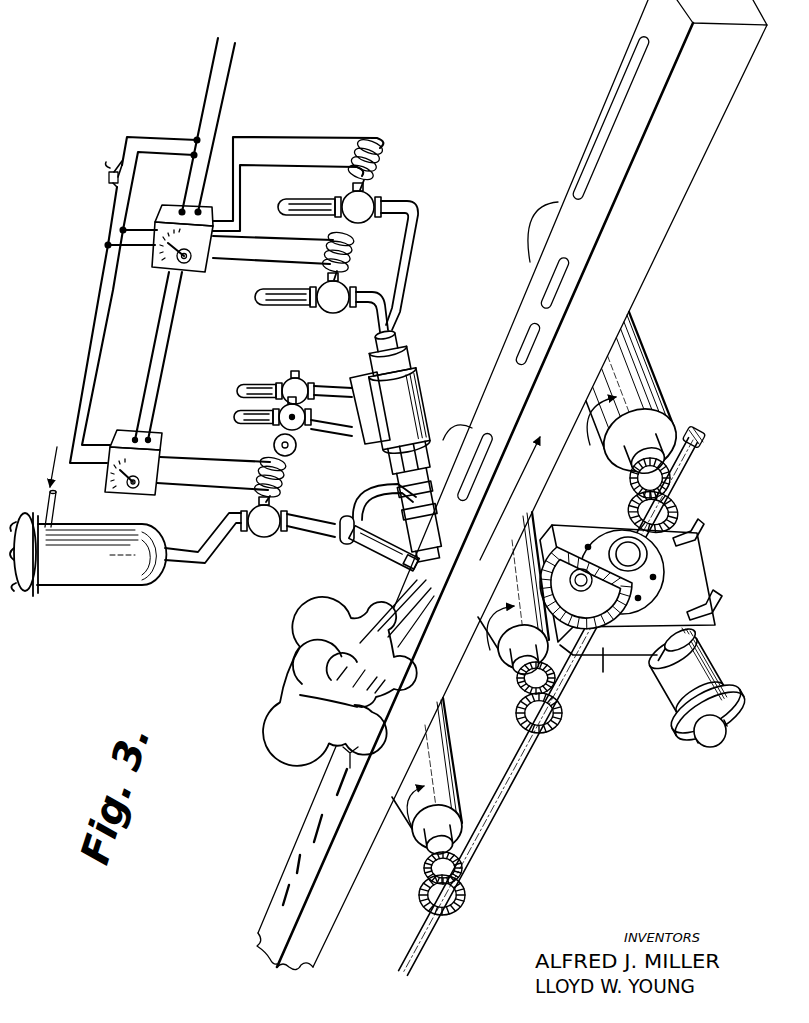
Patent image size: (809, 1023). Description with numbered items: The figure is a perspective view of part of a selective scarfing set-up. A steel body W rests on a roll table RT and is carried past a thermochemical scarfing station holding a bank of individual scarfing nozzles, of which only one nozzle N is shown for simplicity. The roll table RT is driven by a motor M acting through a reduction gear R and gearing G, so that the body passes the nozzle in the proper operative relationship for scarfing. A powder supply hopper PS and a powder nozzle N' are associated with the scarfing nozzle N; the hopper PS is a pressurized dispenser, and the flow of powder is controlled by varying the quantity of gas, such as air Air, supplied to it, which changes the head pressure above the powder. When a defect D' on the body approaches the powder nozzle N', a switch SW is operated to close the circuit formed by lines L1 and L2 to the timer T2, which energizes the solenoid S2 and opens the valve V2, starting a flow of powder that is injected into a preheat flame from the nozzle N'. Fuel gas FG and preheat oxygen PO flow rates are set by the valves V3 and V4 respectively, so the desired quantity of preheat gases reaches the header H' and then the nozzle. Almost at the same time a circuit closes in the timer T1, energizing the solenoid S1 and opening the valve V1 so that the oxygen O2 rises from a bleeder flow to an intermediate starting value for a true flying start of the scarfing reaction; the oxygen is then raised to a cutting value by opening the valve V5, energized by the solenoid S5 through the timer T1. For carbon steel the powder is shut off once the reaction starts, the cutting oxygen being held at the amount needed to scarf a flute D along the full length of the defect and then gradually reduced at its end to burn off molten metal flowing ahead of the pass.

The steel body W is at (500, 387).
The flute D is at (553, 268).
The defect D' is at (457, 495).
The circuit line L1 is at (213, 53).
The circuit line L2 is at (233, 58).
The switch SW is at (108, 177).
The timer T1 is at (157, 272).
The timer T2 is at (115, 488).
The air Air is at (52, 472).
The powder supply hopper PS is at (62, 576).
The solenoid S1 is at (354, 252).
The solenoid S2 is at (288, 480).
The solenoid S5 is at (375, 150).
The valve V1 is at (323, 312).
The valve V2 is at (258, 535).
The valve V3 is at (300, 380).
The valve V4 is at (292, 448).
The valve V5 is at (375, 205).
The oxygen O2 is at (277, 206).
The fuel gas FG is at (236, 388).
The preheat oxygen PO is at (232, 418).
The header H' is at (401, 445).
The scarfing nozzle N is at (384, 509).
The powder nozzle N' is at (379, 547).
The roll table RT is at (648, 372).
The reduction gear R is at (603, 657).
The gearing G is at (528, 706).
The motor M is at (663, 690).